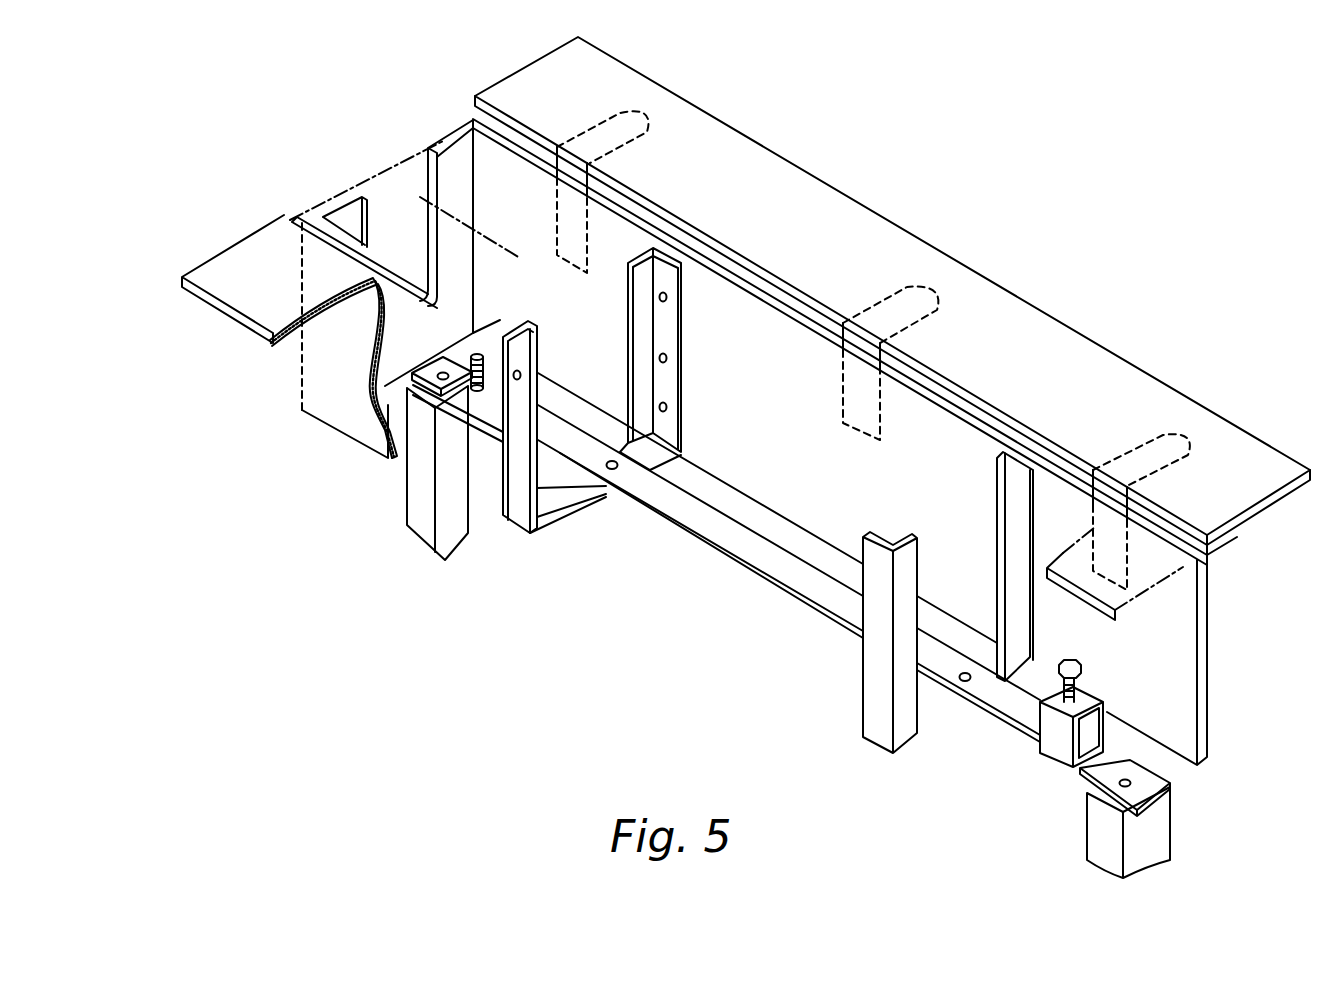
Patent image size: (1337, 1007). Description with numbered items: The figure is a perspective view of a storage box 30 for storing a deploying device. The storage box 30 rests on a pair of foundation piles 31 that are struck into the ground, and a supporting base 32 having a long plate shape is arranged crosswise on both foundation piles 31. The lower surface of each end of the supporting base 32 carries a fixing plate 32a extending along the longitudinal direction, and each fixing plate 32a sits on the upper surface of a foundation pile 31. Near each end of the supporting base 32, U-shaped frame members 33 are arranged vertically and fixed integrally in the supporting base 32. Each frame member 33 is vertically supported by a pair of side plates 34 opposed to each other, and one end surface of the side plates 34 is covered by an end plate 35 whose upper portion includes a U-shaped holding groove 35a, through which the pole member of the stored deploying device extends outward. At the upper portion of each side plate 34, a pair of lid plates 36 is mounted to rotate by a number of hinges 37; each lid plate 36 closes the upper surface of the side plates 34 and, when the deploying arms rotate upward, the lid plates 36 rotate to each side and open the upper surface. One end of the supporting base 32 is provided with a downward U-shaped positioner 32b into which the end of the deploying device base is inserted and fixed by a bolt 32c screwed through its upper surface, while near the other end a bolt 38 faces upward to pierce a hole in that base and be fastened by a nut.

The storage box 30 is at (985, 191).
The foundation pile 31 is at (420, 500).
The supporting base 32 is at (708, 557).
The fixing plate 32a is at (377, 427).
The positioner 32b is at (1050, 720).
The bolt 32c is at (1080, 667).
The frame member 33 is at (515, 527).
The side plate 34 is at (317, 380).
The end plate 35 is at (445, 140).
The holding groove 35a is at (380, 197).
The lid plate 36 is at (543, 52).
The hinge 37 is at (700, 107).
The bolt 38 is at (413, 378).